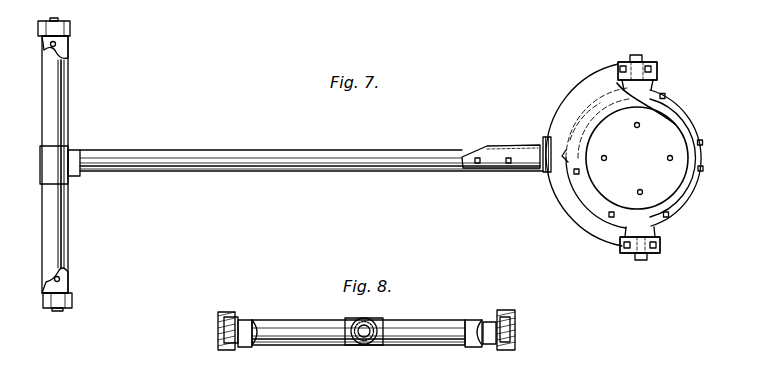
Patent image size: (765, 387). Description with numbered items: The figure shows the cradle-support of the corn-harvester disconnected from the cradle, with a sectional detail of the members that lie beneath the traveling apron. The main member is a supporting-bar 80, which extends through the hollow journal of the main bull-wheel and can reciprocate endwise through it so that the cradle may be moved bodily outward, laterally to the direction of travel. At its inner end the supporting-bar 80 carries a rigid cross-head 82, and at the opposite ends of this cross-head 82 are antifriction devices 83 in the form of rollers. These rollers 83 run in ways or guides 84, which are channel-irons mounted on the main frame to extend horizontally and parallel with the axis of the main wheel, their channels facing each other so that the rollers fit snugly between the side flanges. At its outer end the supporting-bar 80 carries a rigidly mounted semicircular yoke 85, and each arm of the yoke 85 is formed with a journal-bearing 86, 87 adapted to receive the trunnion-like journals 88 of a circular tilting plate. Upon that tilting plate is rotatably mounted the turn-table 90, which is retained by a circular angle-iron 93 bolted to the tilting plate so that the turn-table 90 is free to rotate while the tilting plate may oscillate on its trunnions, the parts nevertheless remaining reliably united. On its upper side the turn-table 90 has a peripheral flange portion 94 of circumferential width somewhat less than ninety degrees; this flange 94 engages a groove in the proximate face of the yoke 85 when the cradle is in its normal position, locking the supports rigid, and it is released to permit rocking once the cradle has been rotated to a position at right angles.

In FIG. 7, the supporting-bar 80 is at (280, 172).
In FIG. 8, the supporting-bar 80 is at (365, 345).
In FIG. 7, the cross-head 82 is at (63, 118).
In FIG. 8, the cross-head 82 is at (327, 340).
In FIG. 7, the antifriction devices 83 is at (68, 32).
In FIG. 8, the antifriction devices 83 is at (220, 347).
In FIG. 8, the ways or guides 84 is at (220, 323).
In FIG. 7, the semicircular yoke 85 is at (563, 205).
In FIG. 7, the journal-bearing 86 is at (646, 58).
In FIG. 7, the journal-bearing 87 is at (646, 258).
In FIG. 7, the trunnion-like journals 88 is at (638, 55).
In FIG. 7, the turn-table 90 is at (678, 155).
In FIG. 7, the circular angle-iron 93 is at (682, 130).
In FIG. 7, the peripheral flange portion 94 is at (598, 105).